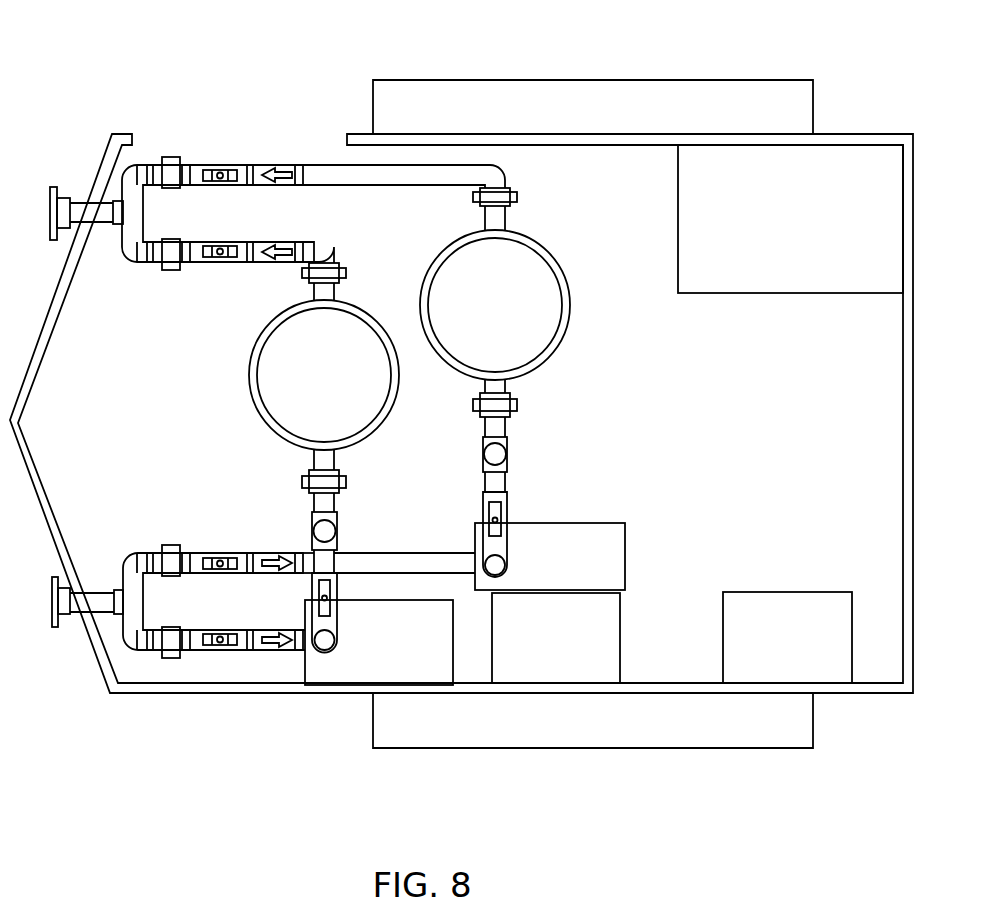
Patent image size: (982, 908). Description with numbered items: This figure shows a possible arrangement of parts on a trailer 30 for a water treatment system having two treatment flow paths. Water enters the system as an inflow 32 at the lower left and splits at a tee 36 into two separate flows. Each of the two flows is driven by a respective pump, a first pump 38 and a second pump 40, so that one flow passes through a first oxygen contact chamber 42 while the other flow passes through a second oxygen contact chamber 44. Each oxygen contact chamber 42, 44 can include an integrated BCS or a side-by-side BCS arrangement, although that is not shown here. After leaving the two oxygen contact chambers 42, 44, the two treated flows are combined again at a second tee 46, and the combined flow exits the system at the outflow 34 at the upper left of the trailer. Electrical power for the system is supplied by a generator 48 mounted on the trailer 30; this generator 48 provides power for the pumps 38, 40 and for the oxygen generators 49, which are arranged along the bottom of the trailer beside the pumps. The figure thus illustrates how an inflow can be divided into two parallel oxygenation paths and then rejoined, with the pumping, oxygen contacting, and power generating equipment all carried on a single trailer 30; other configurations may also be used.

The trailer 30 is at (108, 74).
The inflow 32 is at (54, 628).
The outflow 34 is at (54, 242).
The tee 36 is at (143, 600).
The pump 38 is at (330, 667).
The pump 40 is at (625, 553).
The oxygen contact chamber 42 is at (250, 400).
The oxygen contact chamber 44 is at (543, 357).
The tee 46 is at (143, 212).
The generator 48 is at (792, 293).
The oxygen generators 49 is at (800, 592).